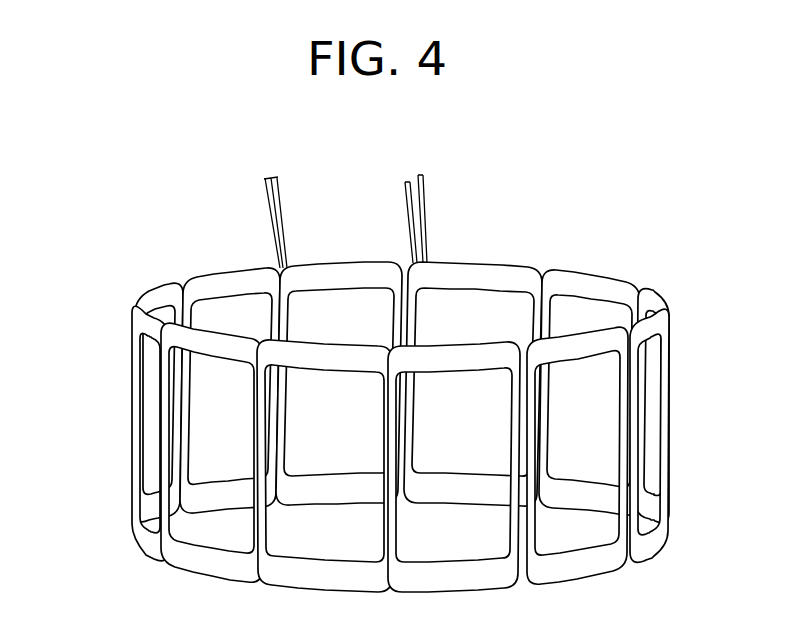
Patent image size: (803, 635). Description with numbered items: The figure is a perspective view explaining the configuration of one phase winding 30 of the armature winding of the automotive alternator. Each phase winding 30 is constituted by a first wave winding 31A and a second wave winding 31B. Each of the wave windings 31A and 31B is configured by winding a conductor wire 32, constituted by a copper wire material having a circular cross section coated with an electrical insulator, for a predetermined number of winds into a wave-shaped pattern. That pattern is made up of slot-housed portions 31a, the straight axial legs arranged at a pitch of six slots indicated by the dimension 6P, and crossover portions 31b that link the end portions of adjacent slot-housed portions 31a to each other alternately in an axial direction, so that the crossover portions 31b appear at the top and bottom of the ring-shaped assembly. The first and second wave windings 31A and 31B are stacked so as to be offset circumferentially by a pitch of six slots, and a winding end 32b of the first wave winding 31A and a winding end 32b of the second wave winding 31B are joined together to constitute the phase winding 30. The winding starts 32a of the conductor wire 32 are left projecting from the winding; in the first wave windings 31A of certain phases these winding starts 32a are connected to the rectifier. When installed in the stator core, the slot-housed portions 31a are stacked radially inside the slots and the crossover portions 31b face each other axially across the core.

The phase winding 30 is at (136, 213).
The first wave winding 31A is at (516, 262).
The second wave winding 31B is at (603, 280).
The slot-housed portion 31a is at (417, 419).
The crossover portion 31b is at (351, 283).
The conductor wire 32 is at (428, 190).
The winding start 32a is at (418, 218).
The winding end 32b is at (284, 225).
The pitch of six slots 6P is at (521, 521).